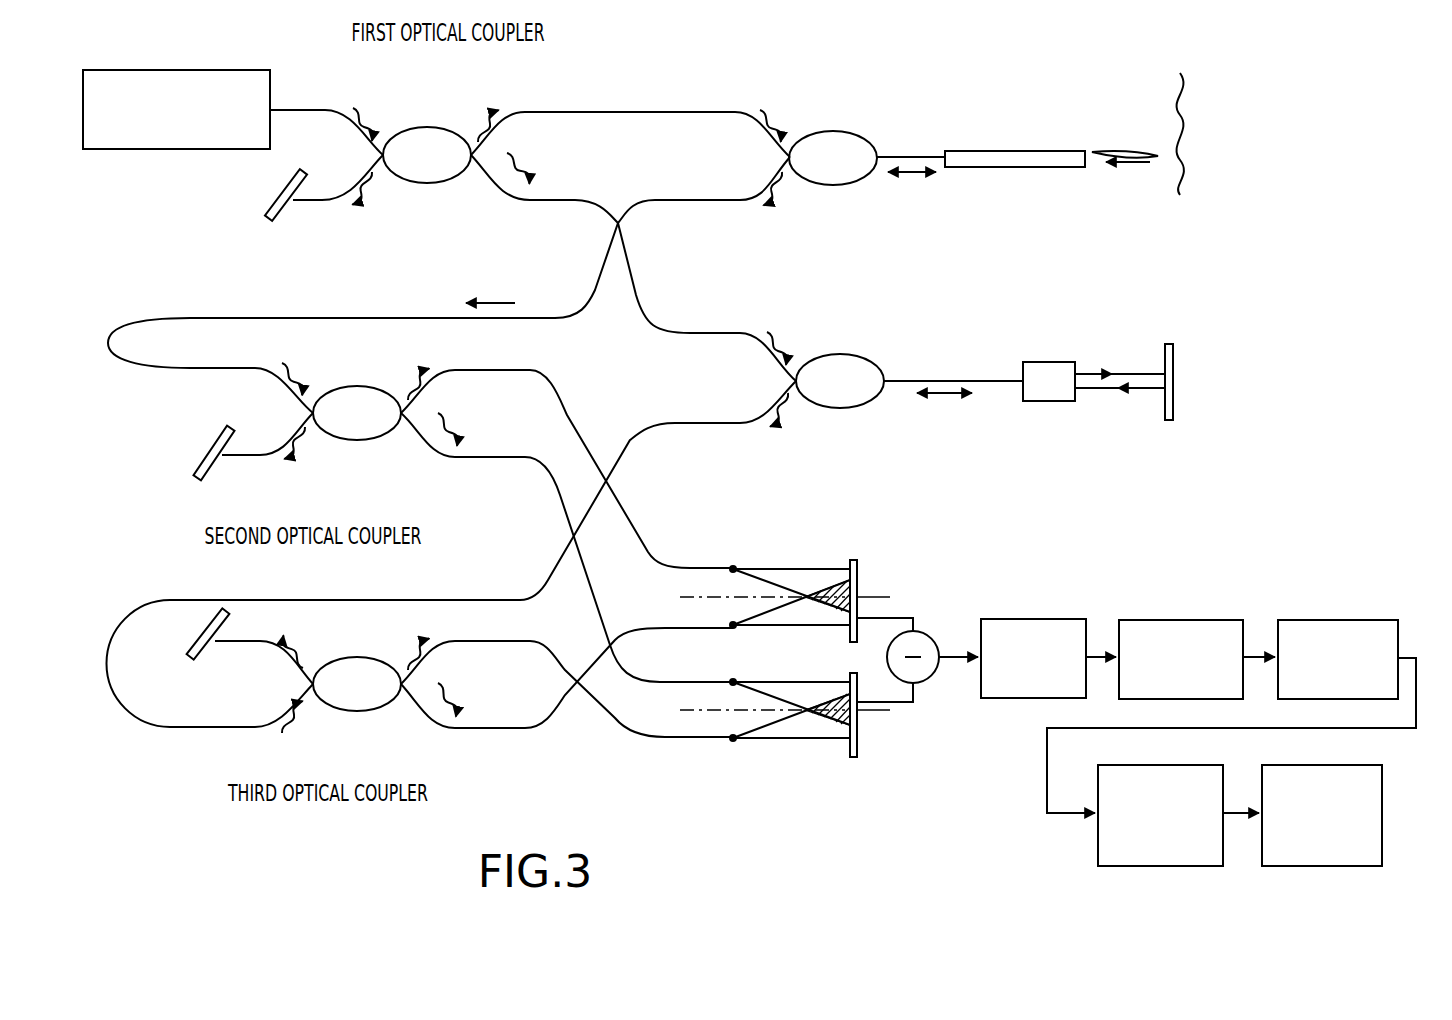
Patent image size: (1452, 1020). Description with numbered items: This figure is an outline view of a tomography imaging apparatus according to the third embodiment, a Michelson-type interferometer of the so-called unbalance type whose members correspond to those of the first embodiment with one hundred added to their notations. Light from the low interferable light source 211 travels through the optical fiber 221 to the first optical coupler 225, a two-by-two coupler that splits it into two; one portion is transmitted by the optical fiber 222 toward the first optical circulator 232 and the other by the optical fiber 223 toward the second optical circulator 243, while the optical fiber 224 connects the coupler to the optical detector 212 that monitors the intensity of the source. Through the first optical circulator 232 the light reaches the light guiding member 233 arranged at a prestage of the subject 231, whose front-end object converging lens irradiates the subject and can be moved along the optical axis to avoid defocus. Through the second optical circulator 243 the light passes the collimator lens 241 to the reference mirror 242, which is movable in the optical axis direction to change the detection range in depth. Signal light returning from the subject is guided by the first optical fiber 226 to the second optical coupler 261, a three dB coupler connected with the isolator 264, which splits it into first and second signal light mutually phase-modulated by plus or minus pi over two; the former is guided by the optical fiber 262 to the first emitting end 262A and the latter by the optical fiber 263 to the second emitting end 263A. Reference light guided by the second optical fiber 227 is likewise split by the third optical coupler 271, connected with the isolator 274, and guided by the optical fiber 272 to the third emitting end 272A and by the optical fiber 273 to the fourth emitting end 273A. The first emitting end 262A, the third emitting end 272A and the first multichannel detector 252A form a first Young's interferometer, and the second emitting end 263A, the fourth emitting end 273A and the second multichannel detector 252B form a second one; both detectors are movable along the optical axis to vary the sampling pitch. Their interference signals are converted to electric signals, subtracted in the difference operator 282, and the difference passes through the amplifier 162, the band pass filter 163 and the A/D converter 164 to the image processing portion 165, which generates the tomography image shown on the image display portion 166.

The low interferable light source 211 is at (163, 150).
The optical detector 212 is at (270, 222).
The optical fiber 221 is at (288, 105).
The optical fiber 222 is at (693, 112).
The optical fiber 223 is at (500, 187).
The optical fiber 224 is at (322, 202).
The first optical coupler 225 is at (427, 127).
The first optical fiber 226 is at (572, 313).
The second optical fiber 227 is at (685, 423).
The subject 231 is at (1142, 118).
The first optical circulator 232 is at (847, 132).
The light guiding member 233 is at (1018, 151).
The collimator lens 241 is at (1045, 362).
The reference mirror 242 is at (1173, 355).
The second optical circulator 243 is at (840, 355).
The second optical coupler 261 is at (338, 438).
The optical fiber 262 is at (450, 374).
The optical fiber 263 is at (433, 445).
The isolator 264 is at (198, 478).
The third optical coupler 271 is at (338, 708).
The optical fiber 272 is at (543, 725).
The optical fiber 273 is at (522, 636).
The isolator 274 is at (228, 623).
The first emitting end 262A is at (733, 569).
The third emitting end 272A is at (733, 625).
The second emitting end 263A is at (733, 682).
The fourth emitting end 273A is at (733, 738).
The first multichannel detector 252A is at (853, 560).
The second multichannel detector 252B is at (853, 757).
The difference operator 282 is at (940, 633).
The amplifier 162 is at (1040, 619).
The band pass filter 163 is at (1218, 620).
The A/D converter 164 is at (1370, 620).
The image processing portion 165 is at (1098, 845).
The image display portion 166 is at (1382, 840).